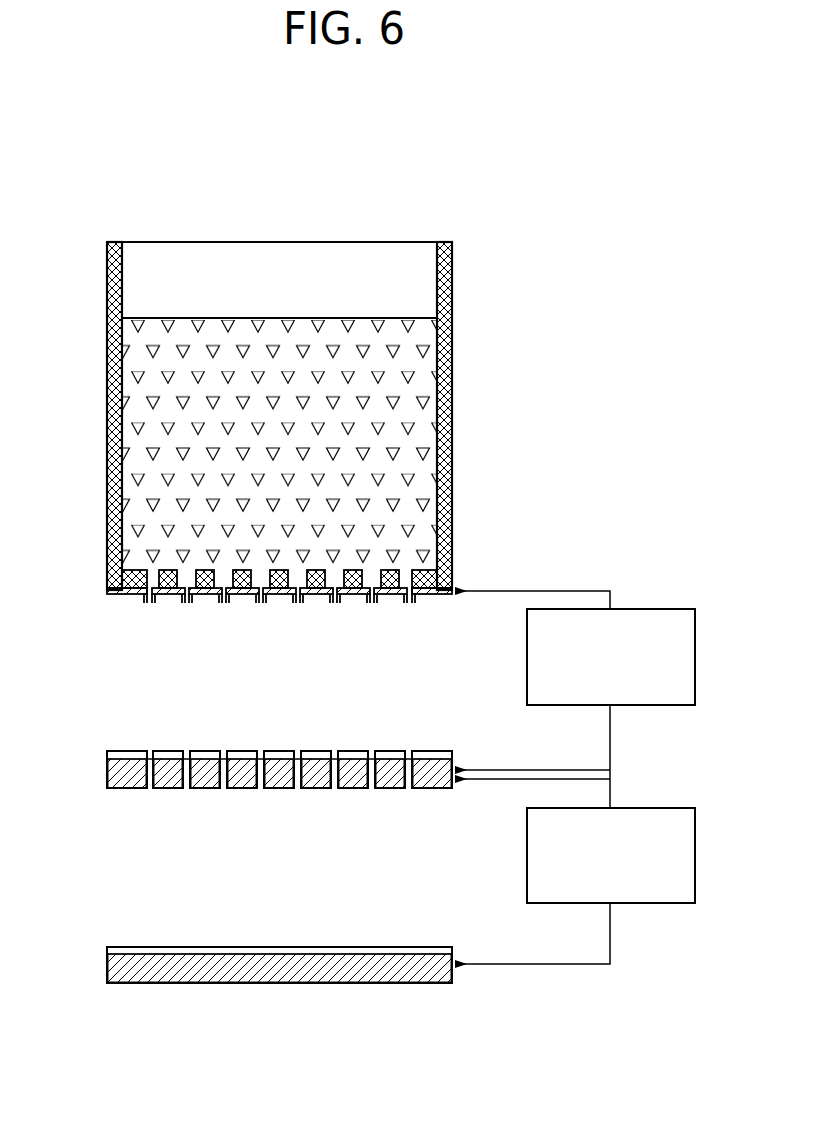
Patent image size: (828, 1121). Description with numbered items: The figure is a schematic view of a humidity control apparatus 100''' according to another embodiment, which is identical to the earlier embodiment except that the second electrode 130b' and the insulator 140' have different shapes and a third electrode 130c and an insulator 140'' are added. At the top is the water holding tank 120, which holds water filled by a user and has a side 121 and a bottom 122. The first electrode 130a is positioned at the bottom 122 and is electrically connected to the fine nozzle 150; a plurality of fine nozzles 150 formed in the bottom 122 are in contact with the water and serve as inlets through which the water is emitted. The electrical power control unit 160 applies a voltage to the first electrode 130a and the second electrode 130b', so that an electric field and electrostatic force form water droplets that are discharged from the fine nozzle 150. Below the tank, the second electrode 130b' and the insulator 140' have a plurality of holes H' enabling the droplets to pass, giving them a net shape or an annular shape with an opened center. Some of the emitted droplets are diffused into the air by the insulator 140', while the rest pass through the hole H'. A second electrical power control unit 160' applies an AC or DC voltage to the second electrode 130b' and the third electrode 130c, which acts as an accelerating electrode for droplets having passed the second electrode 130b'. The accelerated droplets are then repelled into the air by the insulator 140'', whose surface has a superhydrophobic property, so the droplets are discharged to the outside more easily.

The humidity control apparatus 100''' is at (296, 84).
The water holding tank 120 is at (280, 410).
The side 121 is at (107, 384).
The bottom 122 is at (392, 592).
The first electrode 130a is at (122, 591).
The second electrode 130b' is at (319, 761).
The third electrode 130c is at (401, 968).
The insulator 140' is at (319, 736).
The insulator 140'' is at (321, 930).
The fine nozzle 150 is at (340, 595).
The electrical power control unit 160 is at (575, 629).
The electrical power control unit 160' is at (575, 834).
The hole H' is at (164, 706).